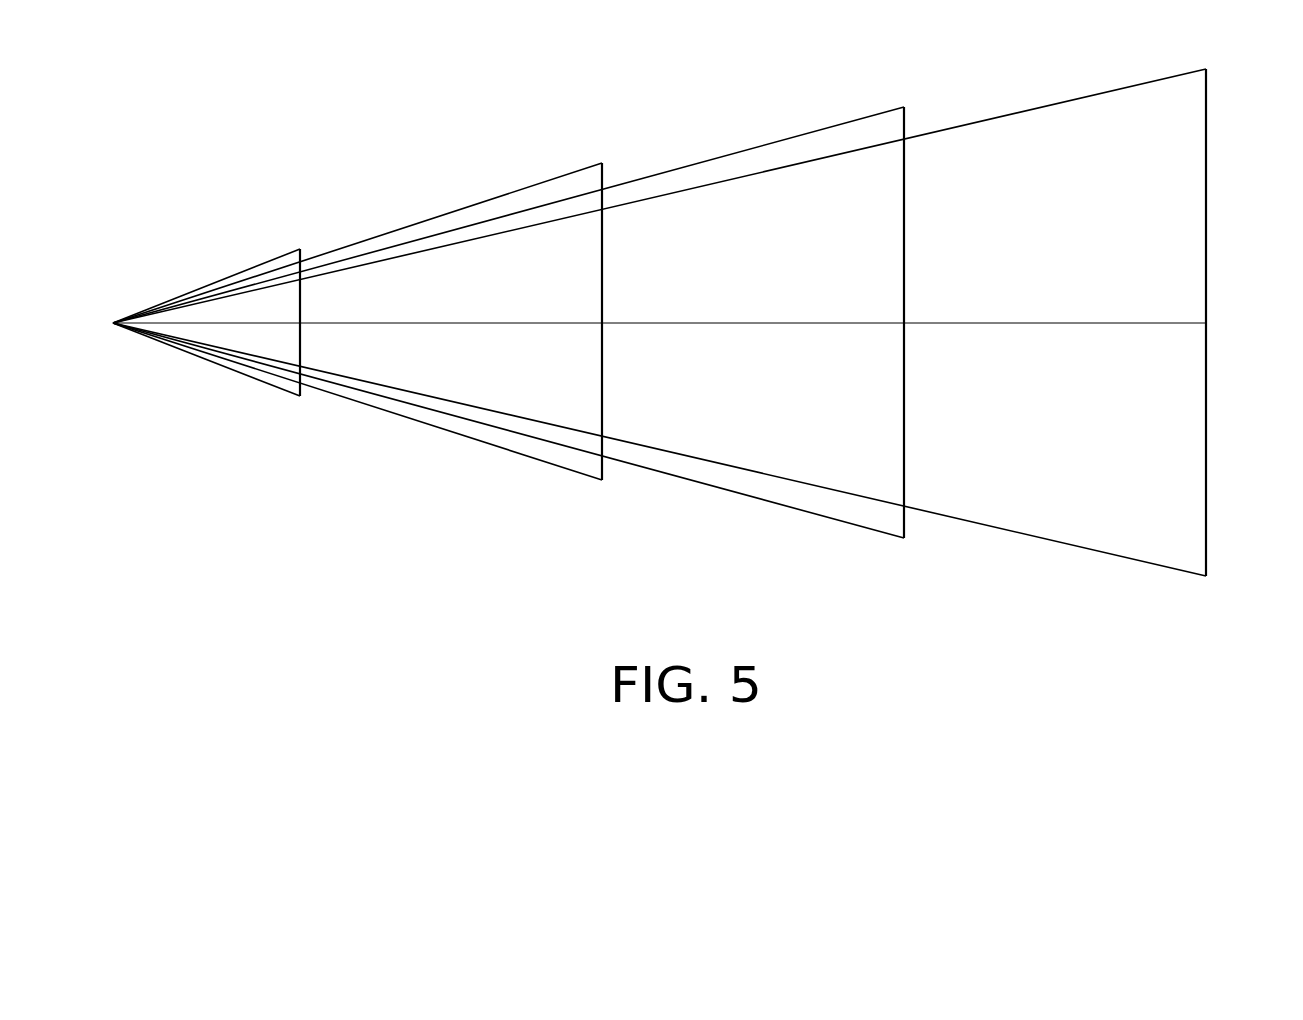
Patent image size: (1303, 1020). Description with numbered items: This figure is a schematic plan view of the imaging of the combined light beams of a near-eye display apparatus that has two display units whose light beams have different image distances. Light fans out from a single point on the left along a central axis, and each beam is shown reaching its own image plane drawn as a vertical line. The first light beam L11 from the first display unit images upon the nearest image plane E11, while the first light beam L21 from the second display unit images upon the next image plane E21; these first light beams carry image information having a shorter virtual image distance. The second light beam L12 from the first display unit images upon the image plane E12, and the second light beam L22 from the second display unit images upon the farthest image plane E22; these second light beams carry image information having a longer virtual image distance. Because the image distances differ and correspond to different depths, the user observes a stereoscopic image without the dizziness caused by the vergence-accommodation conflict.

The first light beam L11 is at (228, 275).
The first light beam L21 is at (490, 200).
The second light beam L12 is at (830, 124).
The second light beam L22 is at (1130, 88).
The image plane E11 is at (301, 350).
The image plane E21 is at (603, 420).
The image plane E12 is at (905, 488).
The image plane E22 is at (1207, 558).